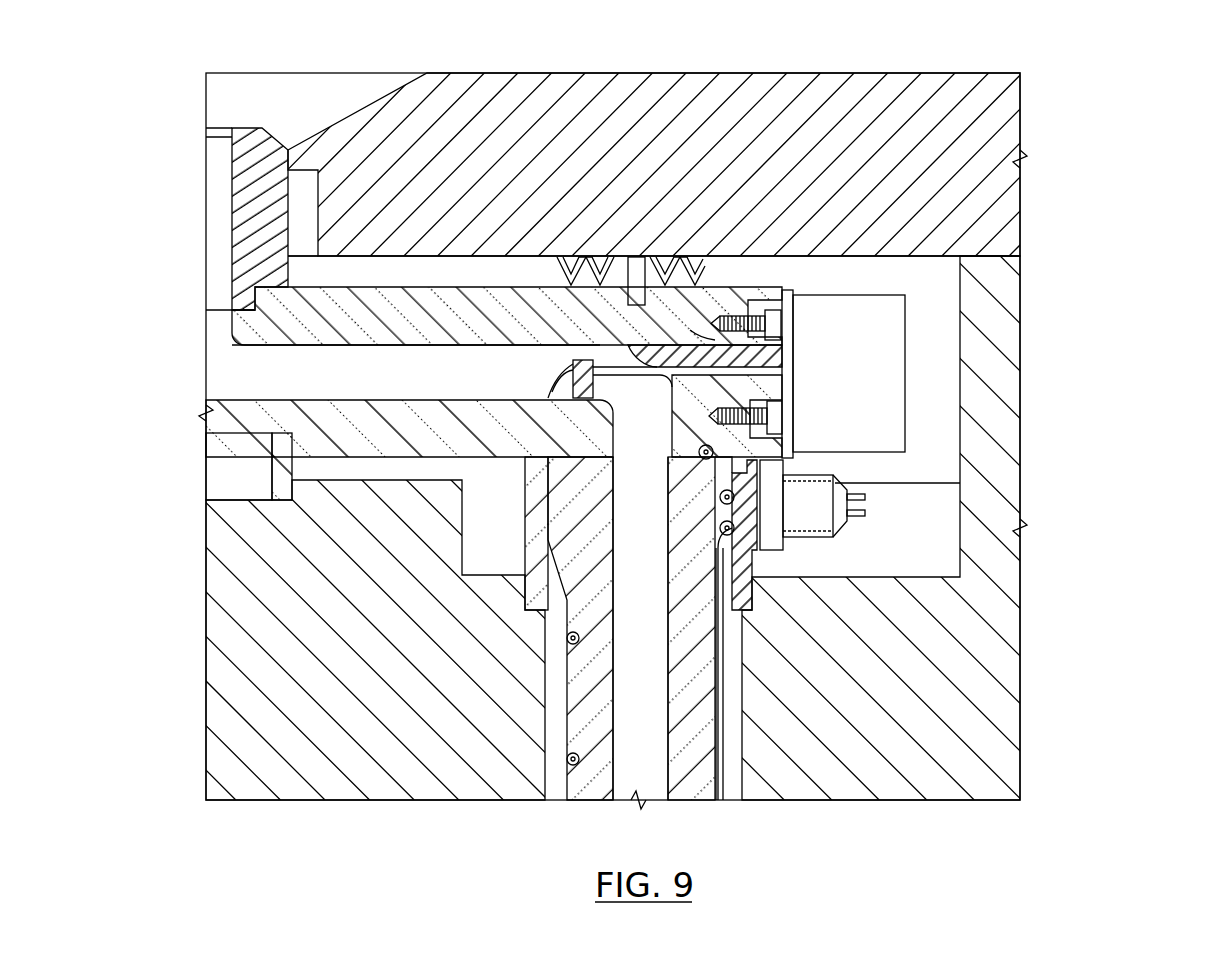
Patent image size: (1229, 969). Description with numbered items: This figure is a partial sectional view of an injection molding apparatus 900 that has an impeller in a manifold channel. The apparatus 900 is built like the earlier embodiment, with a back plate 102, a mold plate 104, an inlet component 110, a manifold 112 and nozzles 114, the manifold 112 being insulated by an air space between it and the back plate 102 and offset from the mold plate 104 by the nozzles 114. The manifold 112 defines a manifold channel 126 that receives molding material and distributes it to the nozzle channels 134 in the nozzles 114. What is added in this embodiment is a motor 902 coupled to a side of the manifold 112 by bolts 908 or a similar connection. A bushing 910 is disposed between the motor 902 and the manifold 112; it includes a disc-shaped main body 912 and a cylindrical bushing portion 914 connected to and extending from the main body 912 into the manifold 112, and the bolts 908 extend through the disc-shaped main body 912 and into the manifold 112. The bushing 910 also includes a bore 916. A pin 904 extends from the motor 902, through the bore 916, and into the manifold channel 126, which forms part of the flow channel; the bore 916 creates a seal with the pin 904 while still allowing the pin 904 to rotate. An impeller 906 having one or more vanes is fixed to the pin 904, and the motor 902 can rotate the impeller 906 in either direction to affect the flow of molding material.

The injection molding apparatus 900 is at (1042, 98).
The back plate 102 is at (1020, 222).
The mold plate 104 is at (1020, 410).
The inlet component 110 is at (290, 149).
The manifold 112 is at (786, 291).
The manifold channel 126 is at (329, 381).
The nozzle channel 134 is at (668, 677).
The nozzle 114 is at (696, 732).
The motor 902 is at (877, 365).
The pin 904 is at (623, 380).
The impeller 906 is at (572, 381).
The bolt 908 is at (740, 320).
The bushing 910 is at (690, 340).
The disc-shaped main body 912 is at (792, 306).
The cylindrical bushing portion 914 is at (655, 345).
The bore 916 is at (781, 404).